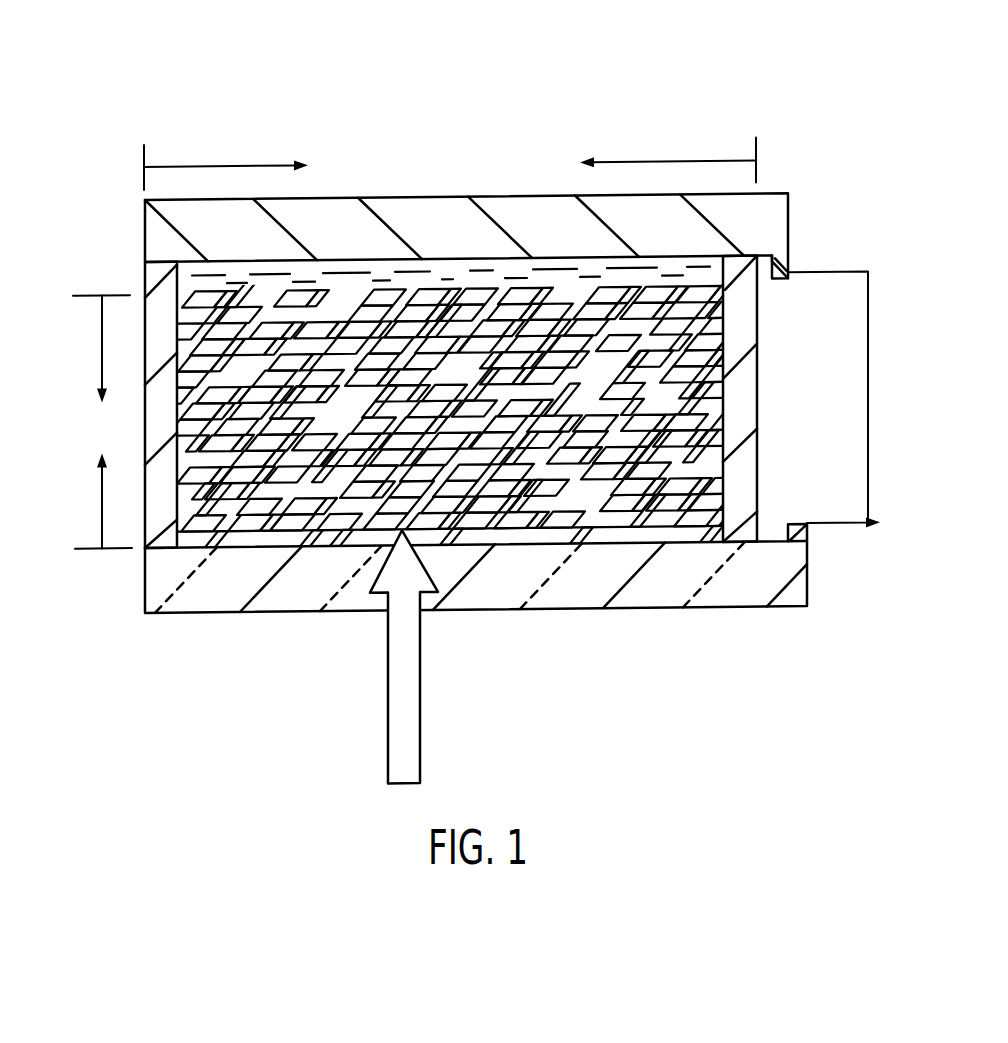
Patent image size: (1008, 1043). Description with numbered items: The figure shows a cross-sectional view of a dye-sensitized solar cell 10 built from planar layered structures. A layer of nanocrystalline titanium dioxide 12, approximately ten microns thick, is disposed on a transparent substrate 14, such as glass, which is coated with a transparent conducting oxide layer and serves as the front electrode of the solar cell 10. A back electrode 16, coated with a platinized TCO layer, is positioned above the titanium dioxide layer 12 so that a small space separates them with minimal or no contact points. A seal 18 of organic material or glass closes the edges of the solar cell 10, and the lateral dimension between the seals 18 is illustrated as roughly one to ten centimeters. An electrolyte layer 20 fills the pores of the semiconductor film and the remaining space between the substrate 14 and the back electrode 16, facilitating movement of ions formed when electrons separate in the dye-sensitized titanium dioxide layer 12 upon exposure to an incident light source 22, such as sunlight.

The dye-sensitized solar cell 10 is at (484, 56).
The nanocrystalline titanium dioxide layer 12 is at (200, 333).
The transparent substrate 14 is at (155, 583).
The back electrode 16 is at (160, 240).
The seal 18 is at (153, 275).
The electrolyte layer 20 is at (712, 281).
The light source 22 is at (406, 749).